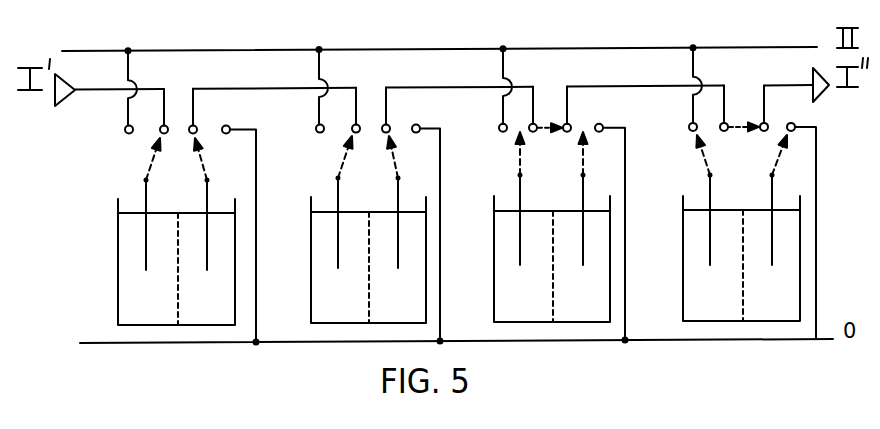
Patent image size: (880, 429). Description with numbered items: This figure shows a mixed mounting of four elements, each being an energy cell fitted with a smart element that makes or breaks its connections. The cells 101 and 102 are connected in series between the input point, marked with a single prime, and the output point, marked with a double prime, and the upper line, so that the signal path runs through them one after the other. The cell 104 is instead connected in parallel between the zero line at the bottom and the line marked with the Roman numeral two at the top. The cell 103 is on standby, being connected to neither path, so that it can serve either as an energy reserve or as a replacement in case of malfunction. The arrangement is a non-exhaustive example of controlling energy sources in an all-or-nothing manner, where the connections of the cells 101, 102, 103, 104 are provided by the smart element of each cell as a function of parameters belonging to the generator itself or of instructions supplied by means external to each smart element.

The cell 101 is at (138, 293).
The cell 102 is at (330, 293).
The cell 103 is at (520, 293).
The cell 104 is at (706, 293).